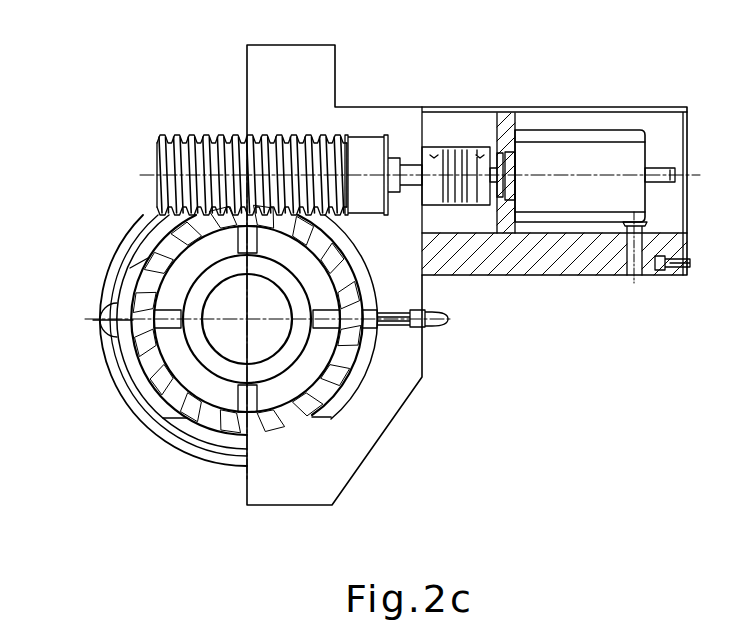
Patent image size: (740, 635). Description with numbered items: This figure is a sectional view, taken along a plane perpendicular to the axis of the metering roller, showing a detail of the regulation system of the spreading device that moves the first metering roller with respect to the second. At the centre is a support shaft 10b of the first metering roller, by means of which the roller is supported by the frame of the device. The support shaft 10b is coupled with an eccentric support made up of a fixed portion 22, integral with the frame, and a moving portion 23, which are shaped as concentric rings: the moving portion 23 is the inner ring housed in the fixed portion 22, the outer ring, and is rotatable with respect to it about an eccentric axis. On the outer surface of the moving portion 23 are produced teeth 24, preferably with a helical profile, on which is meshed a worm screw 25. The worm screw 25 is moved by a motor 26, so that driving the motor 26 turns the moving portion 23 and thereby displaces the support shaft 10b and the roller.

The worm screw 25 is at (197, 137).
The motor 26 is at (585, 153).
The fixed portion 22 is at (147, 245).
The teeth 24 is at (150, 258).
The moving portion 23 is at (153, 365).
The support shaft 10b is at (235, 350).